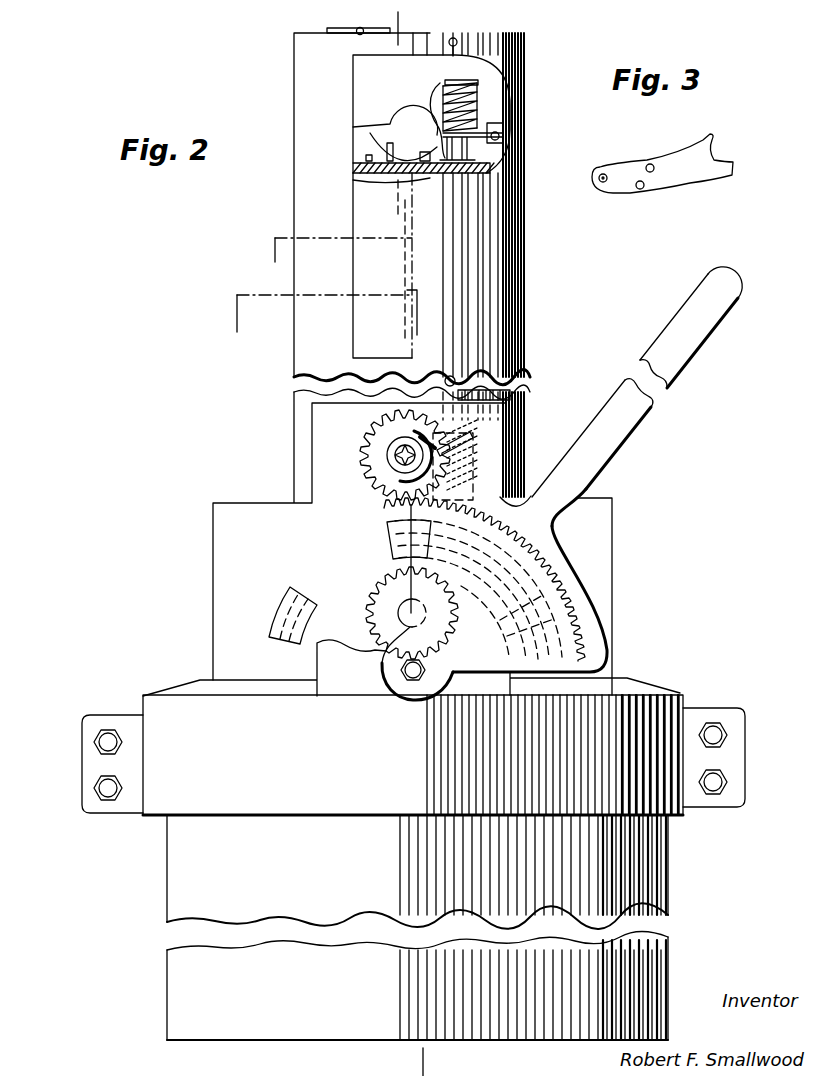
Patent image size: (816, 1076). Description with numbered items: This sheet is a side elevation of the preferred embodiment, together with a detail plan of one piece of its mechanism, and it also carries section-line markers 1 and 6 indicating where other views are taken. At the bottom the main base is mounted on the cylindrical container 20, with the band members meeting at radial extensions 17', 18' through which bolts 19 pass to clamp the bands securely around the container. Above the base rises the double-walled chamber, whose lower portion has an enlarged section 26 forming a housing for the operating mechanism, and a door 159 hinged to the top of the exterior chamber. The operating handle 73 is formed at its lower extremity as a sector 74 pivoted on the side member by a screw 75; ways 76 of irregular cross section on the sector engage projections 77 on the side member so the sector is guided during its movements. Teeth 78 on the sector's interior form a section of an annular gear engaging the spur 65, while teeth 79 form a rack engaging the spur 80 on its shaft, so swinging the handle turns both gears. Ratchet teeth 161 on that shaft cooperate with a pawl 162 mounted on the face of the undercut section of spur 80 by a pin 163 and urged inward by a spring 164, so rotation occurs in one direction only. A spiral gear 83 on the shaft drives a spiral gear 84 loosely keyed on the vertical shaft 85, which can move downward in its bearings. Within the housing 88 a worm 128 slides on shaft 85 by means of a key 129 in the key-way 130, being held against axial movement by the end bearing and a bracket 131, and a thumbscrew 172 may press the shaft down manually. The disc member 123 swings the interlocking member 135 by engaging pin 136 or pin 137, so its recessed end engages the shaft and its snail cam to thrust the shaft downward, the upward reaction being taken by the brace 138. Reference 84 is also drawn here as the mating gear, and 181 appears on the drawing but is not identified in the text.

In FIG. 2, the section line 1- 1 is at (229, 316).
In FIG. 2, the section line 6- 6 is at (389, 20).
In FIG. 2, the radial extension 17' is at (93, 764).
In FIG. 2, the radial extension 18' is at (736, 757).
In FIG. 2, the bolts 19 is at (112, 735).
In FIG. 2, the cylindrical container 20 is at (178, 882).
In FIG. 2, the enlarged section 26 is at (222, 600).
In FIG. 2, the spur gear 65 is at (387, 606).
In FIG. 2, the operating handle 73 is at (693, 340).
In FIG. 2, the sector 74 is at (585, 612).
In FIG. 2, the screw 75 is at (410, 682).
In FIG. 2, the ways 76 is at (518, 562).
In FIG. 2, the projections 77 is at (392, 540).
In FIG. 2, the teeth 78 is at (504, 627).
In FIG. 2, the teeth 79 is at (563, 587).
In FIG. 2, the spur 80 is at (472, 575).
In FIG. 2, the spiral gear 83 is at (366, 436).
In FIG. 2, the spiral gear 84 is at (480, 462).
In FIG. 2, the shaft 85 is at (455, 270).
In FIG. 2, the housing 88 is at (368, 77).
In FIG. 2, the disc member 123 is at (375, 138).
In FIG. 2, the worm 128 is at (478, 100).
In FIG. 2, the key 129 is at (478, 112).
In FIG. 2, the key-way 130 is at (485, 163).
In FIG. 2, the bracket 131 is at (503, 132).
In FIG. 3, the interlocking member 135 is at (697, 178).
In FIG. 3, the pin 136 is at (652, 165).
In FIG. 3, the pin 137 is at (637, 187).
In FIG. 2, the brace 138 is at (372, 175).
In FIG. 2, the door 159 is at (305, 340).
In FIG. 2, the ratchet teeth 161 is at (393, 466).
In FIG. 2, the pawl 162 is at (412, 437).
In FIG. 2, the pin 163 is at (462, 398).
In FIG. 2, the spring 164 is at (437, 440).
In FIG. 2, the thumbscrew 172 is at (458, 36).
In FIG. 2, the bar 181 is at (473, 436).